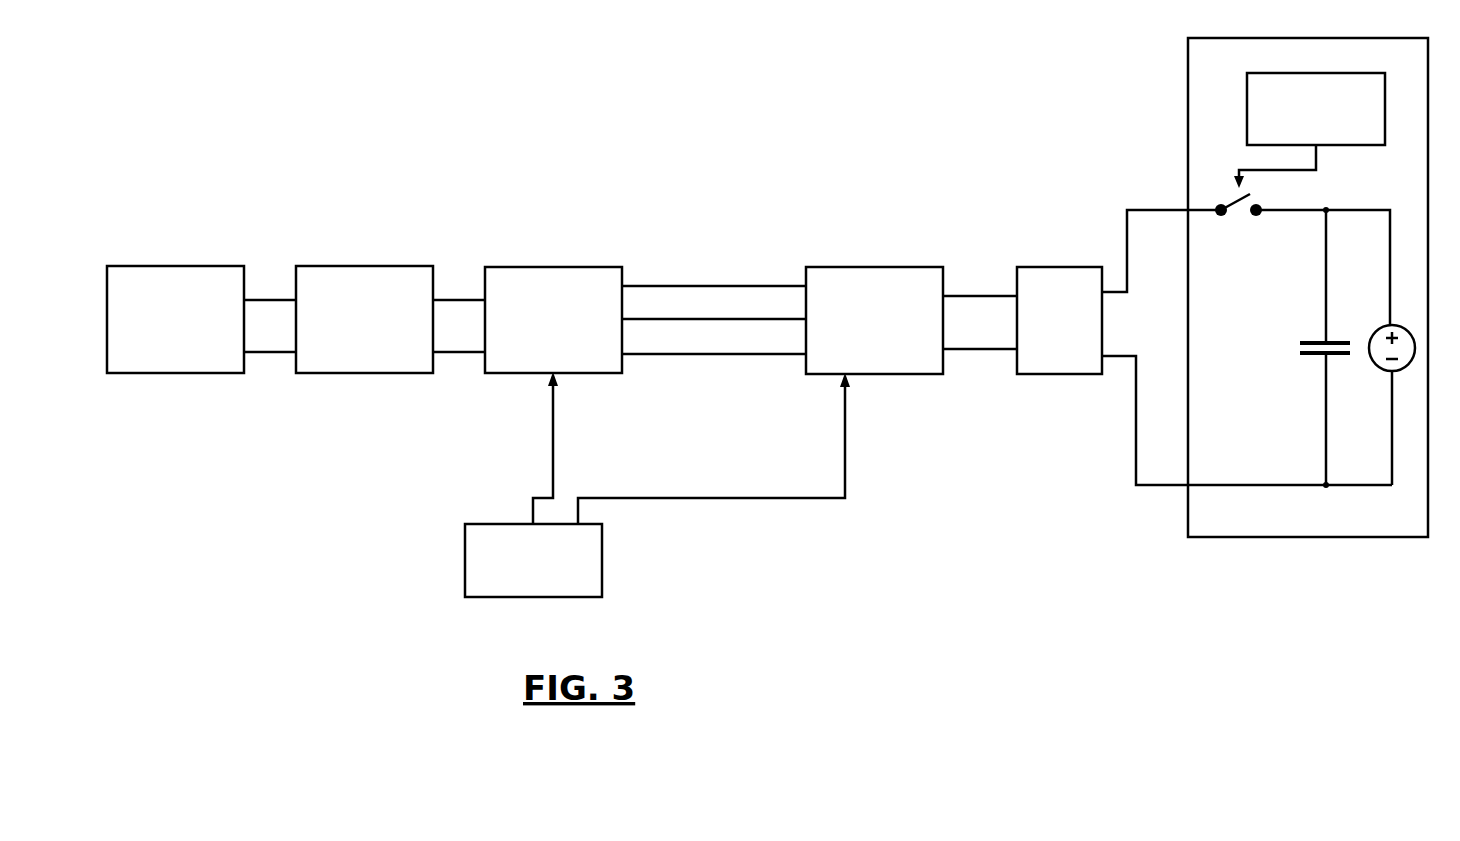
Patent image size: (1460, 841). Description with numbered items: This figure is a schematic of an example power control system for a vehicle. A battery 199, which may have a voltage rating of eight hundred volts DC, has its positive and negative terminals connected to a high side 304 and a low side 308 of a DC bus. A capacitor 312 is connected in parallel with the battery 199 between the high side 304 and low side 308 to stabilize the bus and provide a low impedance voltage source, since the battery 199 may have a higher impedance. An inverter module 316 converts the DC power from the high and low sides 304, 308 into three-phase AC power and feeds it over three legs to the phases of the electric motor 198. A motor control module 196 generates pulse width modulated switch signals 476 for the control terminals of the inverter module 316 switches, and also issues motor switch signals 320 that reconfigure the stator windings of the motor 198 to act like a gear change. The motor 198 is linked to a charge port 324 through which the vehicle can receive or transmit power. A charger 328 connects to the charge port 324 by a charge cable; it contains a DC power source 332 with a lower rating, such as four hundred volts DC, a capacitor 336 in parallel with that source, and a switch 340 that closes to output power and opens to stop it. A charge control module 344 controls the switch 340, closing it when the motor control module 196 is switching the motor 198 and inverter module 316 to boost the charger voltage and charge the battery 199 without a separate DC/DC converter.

The battery 199 is at (175, 266).
The capacitor 312 is at (363, 266).
The inverter module 316 is at (552, 267).
The electric motor 198 is at (876, 374).
The charge port 324 is at (1059, 374).
The high side 304 is at (271, 300).
The low side 308 is at (263, 352).
The motor control module 196 is at (465, 559).
The switch signals 476 is at (553, 442).
The motor switch signals 320 is at (845, 417).
The charger 328 is at (1308, 537).
The charge control module 344 is at (1247, 108).
The switch 340 is at (1240, 241).
The capacitor 336 is at (1268, 350).
The DC power source 332 is at (1383, 372).